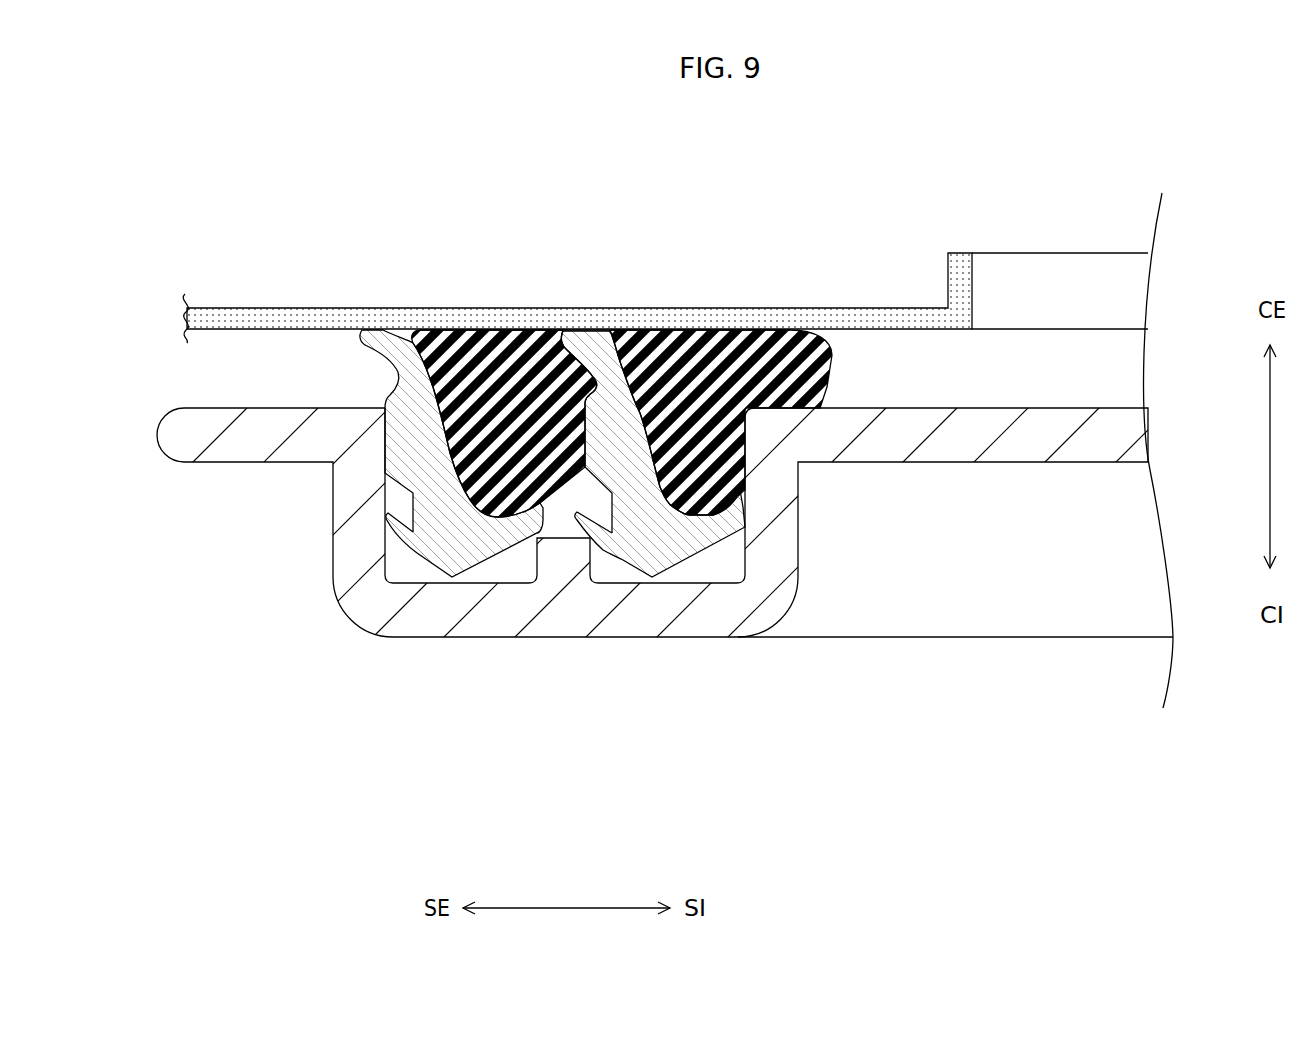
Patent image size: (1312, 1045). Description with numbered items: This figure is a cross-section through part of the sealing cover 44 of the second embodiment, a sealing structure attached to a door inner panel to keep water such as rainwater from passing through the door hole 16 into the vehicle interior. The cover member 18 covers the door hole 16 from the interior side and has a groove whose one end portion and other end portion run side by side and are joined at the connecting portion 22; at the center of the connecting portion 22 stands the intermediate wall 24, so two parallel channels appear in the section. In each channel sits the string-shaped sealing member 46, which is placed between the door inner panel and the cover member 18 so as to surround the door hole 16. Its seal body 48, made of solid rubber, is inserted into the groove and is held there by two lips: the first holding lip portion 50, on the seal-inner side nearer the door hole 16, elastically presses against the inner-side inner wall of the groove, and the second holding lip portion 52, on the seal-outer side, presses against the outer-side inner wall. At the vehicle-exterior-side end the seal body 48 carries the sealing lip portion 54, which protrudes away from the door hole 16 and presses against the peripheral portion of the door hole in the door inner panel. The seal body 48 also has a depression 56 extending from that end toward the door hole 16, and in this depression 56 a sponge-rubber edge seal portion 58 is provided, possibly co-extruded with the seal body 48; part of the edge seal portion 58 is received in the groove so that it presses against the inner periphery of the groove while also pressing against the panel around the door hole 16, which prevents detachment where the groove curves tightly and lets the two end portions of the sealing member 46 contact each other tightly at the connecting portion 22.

The door hole 16 is at (972, 287).
The cover member 18 is at (245, 302).
The connecting portion 22 is at (733, 563).
The intermediate wall 24 is at (598, 553).
The sealing cover 44 is at (552, 499).
The sealing member 46 is at (530, 322).
The seal body 48 is at (420, 550).
The first holding lip portion 50 is at (745, 517).
The second holding lip portion 52 is at (387, 518).
The sealing lip portion 54 is at (378, 330).
The depression 56 is at (672, 478).
The edge seal portion 58 is at (482, 345).